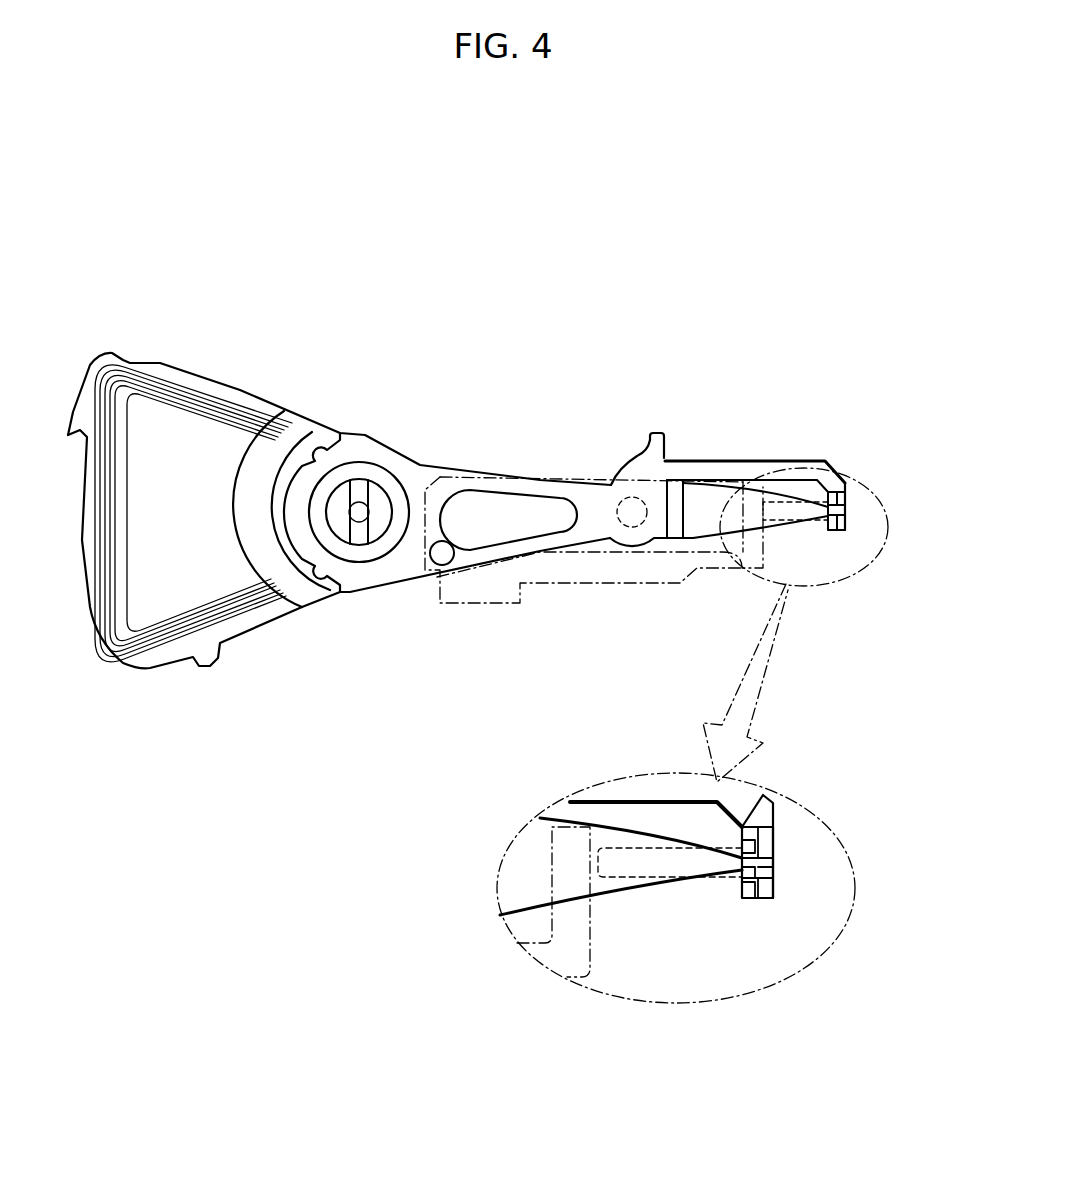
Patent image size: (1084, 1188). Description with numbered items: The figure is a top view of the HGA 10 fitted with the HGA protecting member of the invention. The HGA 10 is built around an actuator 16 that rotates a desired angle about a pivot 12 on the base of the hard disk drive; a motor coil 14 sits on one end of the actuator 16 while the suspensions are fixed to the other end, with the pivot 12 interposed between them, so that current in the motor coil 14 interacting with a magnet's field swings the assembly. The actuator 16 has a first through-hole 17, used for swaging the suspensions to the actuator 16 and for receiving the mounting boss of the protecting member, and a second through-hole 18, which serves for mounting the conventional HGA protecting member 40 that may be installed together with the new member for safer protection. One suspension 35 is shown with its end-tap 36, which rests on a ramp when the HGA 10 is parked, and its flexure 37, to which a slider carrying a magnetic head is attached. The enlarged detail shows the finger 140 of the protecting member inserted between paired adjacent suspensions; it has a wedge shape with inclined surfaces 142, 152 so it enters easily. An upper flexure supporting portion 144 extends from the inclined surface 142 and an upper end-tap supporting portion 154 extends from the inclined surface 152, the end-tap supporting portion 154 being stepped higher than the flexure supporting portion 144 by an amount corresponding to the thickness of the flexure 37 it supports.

The HGA 10 is at (387, 484).
The pivot 12 is at (360, 510).
The motor coil 14 is at (183, 403).
The actuator 16 is at (532, 478).
The first through-hole 17 is at (637, 505).
The second through-hole 18 is at (435, 568).
The suspension 35 is at (720, 520).
The end-tap 36 is at (775, 858).
The flexure 37 is at (637, 882).
The conventional HGA protecting member 40 is at (496, 610).
The finger 140 is at (848, 505).
The inclined surface 142 is at (753, 900).
The upper flexure supporting portion 144 is at (777, 877).
The inclined surface 152 is at (767, 887).
The upper end-tap supporting portion 154 is at (765, 842).